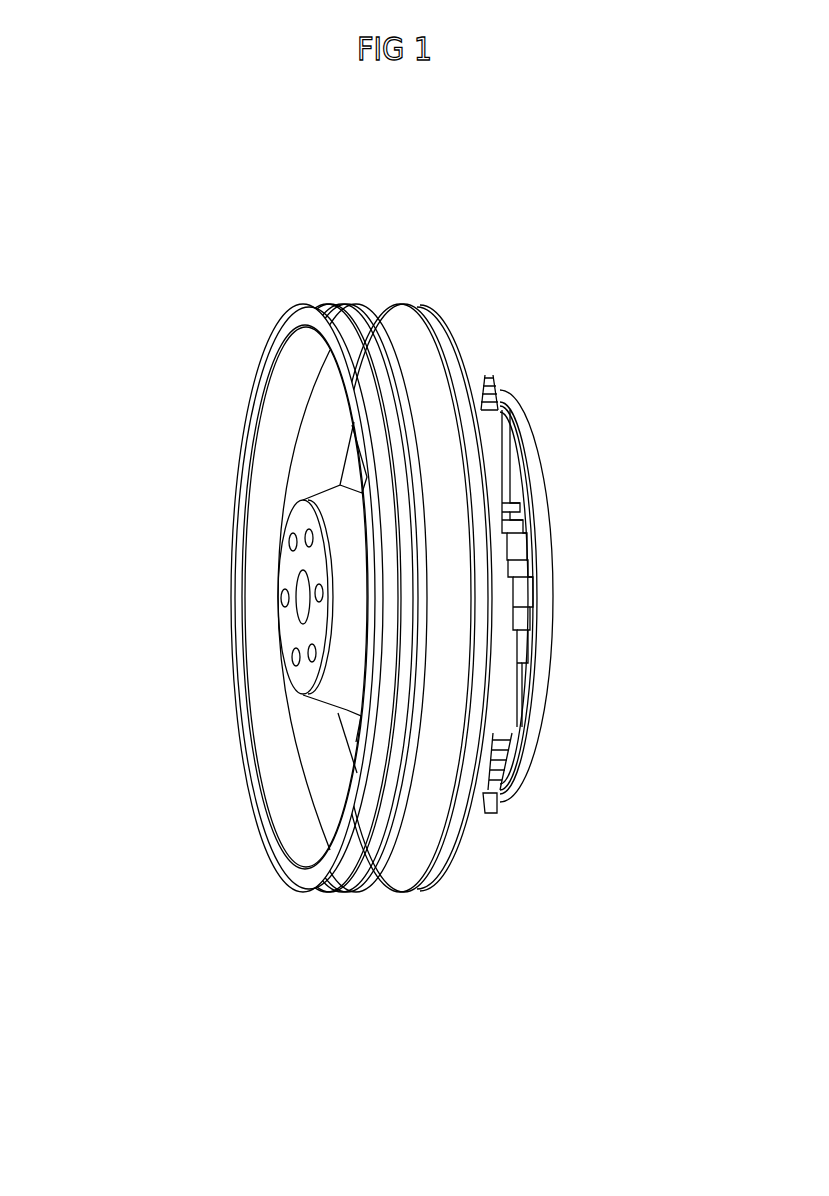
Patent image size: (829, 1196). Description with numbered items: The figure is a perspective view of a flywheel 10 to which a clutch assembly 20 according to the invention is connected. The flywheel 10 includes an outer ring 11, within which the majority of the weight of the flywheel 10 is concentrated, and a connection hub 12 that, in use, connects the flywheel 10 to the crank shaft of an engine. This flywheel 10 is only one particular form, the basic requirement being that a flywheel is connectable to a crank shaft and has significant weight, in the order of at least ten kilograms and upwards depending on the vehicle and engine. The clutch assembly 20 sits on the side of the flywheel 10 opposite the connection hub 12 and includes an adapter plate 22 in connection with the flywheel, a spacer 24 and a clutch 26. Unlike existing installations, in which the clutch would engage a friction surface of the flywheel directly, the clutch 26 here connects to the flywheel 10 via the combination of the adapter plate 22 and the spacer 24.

The flywheel 10 is at (397, 863).
The outer ring 11 is at (283, 873).
The connection hub 12 is at (292, 632).
The clutch assembly 20 is at (527, 452).
The adapter plate 22 is at (470, 848).
The spacer 24 is at (503, 687).
The clutch 26 is at (547, 627).